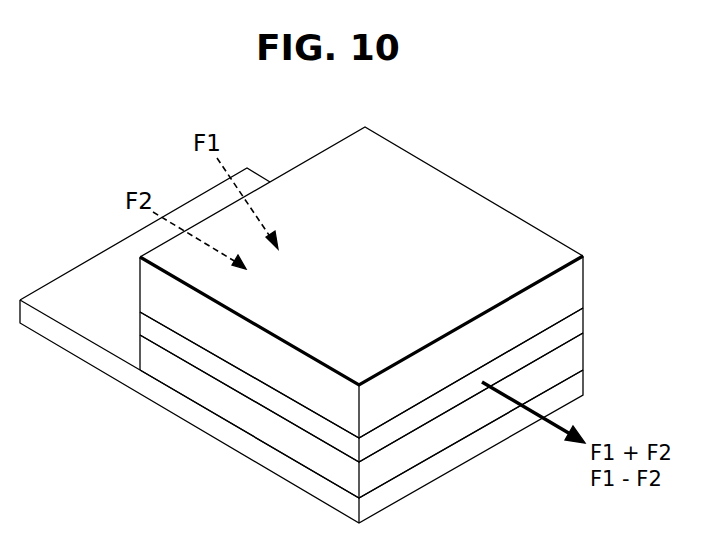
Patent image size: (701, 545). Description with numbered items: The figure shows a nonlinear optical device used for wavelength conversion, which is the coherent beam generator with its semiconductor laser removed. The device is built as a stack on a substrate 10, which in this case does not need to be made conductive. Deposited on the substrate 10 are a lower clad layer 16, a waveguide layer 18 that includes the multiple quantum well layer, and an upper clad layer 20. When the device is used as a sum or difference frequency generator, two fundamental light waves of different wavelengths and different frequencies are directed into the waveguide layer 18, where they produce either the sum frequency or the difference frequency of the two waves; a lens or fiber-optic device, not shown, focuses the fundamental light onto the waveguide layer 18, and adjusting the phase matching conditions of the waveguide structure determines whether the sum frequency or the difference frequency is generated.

The substrate 10 is at (458, 458).
The clad layer 16 is at (578, 352).
The waveguide layer 18 is at (578, 323).
The clad layer 20 is at (577, 283).